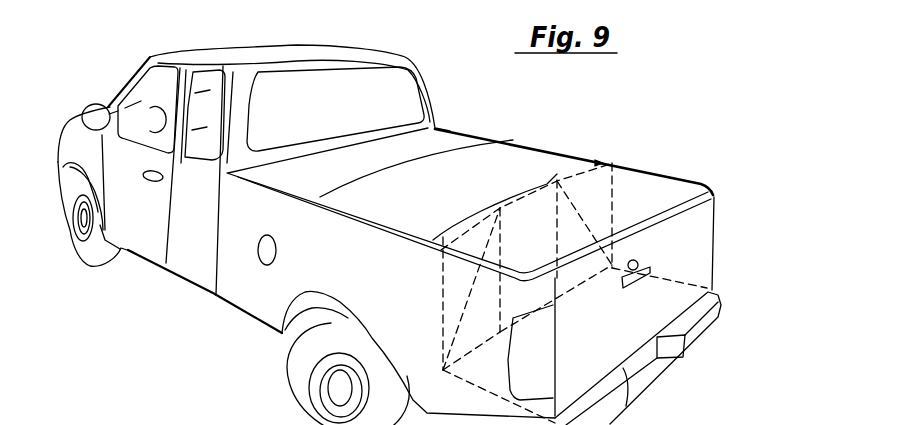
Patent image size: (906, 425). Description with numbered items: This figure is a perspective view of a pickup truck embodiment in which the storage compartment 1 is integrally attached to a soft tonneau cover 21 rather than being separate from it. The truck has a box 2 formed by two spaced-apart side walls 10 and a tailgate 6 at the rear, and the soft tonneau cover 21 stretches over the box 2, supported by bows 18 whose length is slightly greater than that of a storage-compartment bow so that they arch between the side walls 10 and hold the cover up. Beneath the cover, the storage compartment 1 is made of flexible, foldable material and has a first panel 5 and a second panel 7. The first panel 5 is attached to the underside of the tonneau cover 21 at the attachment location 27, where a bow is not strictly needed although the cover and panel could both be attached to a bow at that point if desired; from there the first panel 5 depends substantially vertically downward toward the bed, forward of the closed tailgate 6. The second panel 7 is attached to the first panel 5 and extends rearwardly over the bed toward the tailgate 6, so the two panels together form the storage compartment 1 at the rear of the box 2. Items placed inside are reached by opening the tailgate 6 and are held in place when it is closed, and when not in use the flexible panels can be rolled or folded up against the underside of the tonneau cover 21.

The storage compartment 1 is at (643, 190).
The box 2 is at (336, 260).
The first panel 5 is at (527, 245).
The tailgate 6 is at (693, 232).
The second panel 7 is at (603, 359).
The side walls 10 is at (487, 209).
The bows 18 is at (545, 184).
The tonneau cover 21 is at (473, 168).
The attachment location 27 is at (547, 182).